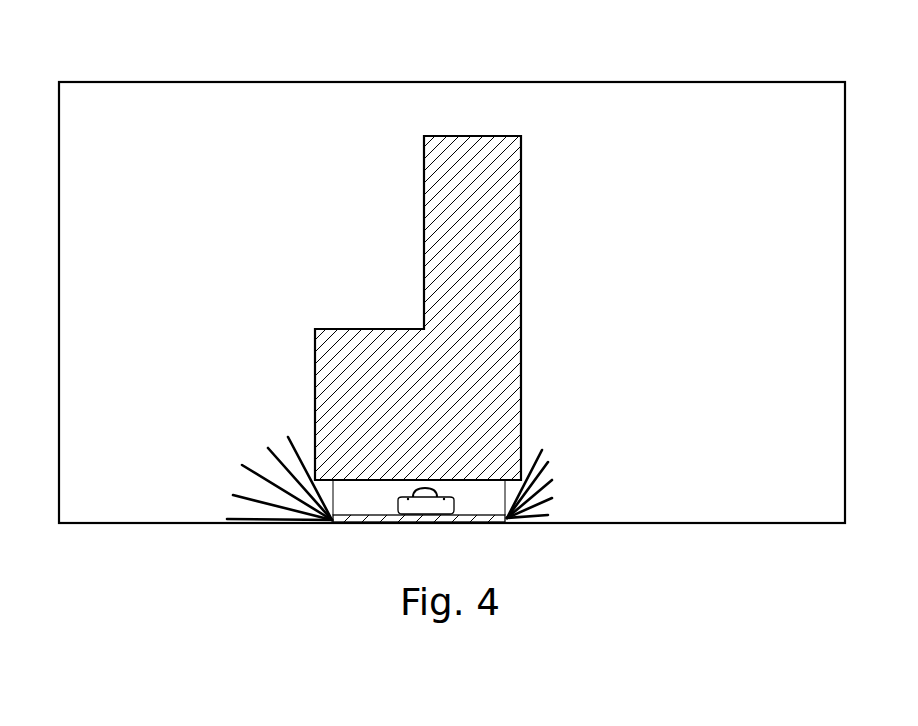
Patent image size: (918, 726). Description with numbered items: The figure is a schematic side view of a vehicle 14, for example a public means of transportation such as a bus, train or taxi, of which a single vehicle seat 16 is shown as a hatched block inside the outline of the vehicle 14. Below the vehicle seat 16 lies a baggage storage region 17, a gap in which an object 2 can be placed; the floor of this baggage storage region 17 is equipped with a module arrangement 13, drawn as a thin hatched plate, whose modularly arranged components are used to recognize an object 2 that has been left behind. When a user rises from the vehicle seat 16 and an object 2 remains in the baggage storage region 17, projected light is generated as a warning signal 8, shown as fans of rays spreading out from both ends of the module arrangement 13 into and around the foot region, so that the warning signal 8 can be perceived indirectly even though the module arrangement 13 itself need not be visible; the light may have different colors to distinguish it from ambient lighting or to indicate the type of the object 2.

The vehicle 14 is at (112, 71).
The vehicle seat 16 is at (521, 226).
The module arrangement 13 is at (509, 524).
The baggage storage region 17 is at (333, 503).
The object 2 is at (455, 501).
The warning signal 8 is at (237, 496).